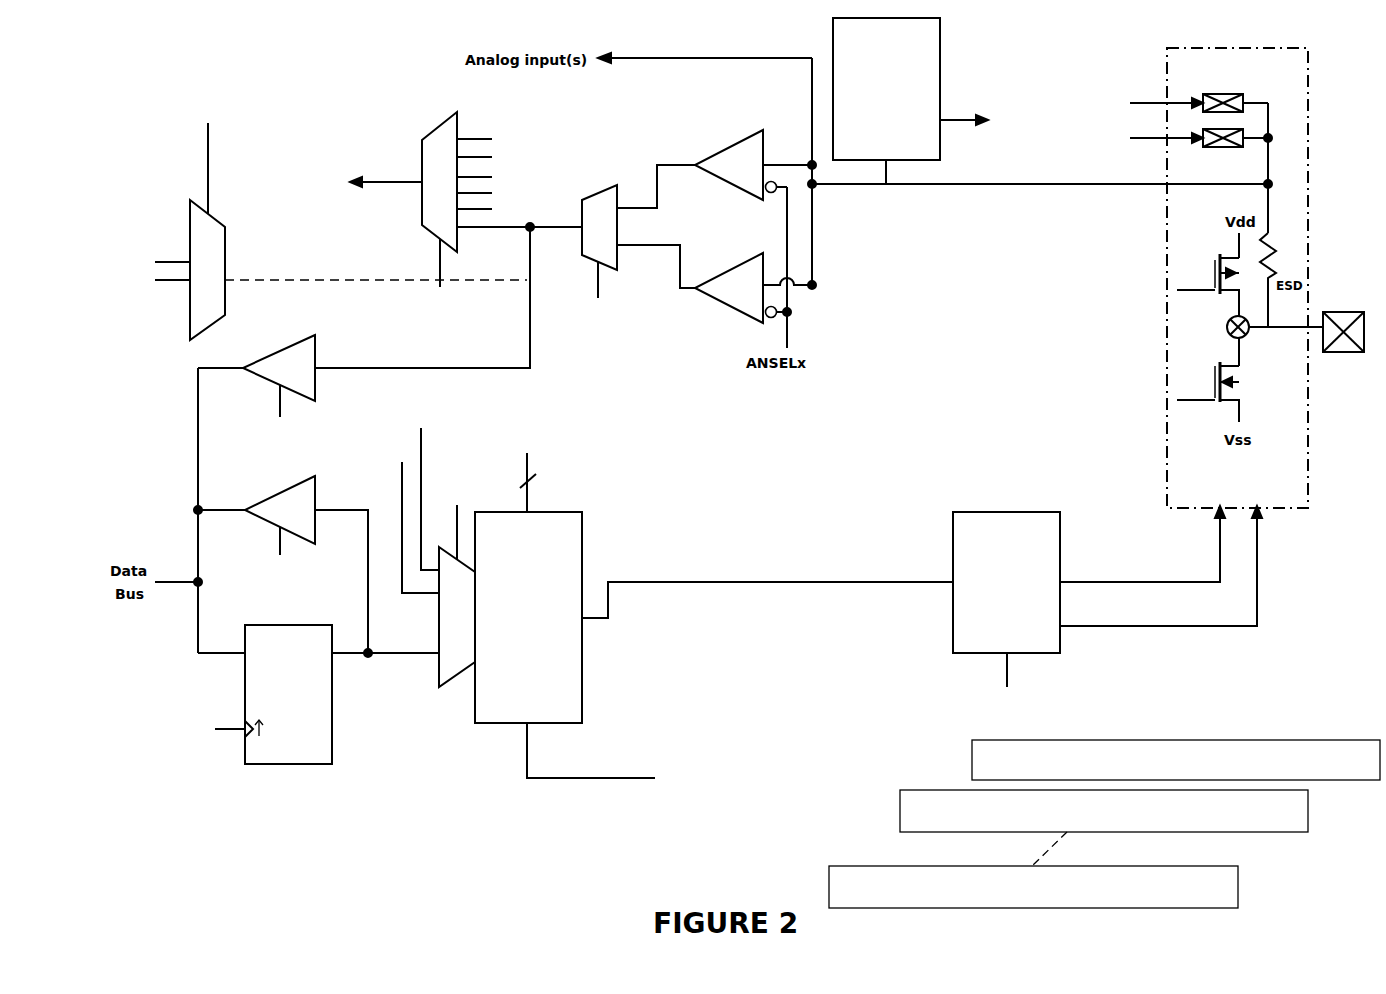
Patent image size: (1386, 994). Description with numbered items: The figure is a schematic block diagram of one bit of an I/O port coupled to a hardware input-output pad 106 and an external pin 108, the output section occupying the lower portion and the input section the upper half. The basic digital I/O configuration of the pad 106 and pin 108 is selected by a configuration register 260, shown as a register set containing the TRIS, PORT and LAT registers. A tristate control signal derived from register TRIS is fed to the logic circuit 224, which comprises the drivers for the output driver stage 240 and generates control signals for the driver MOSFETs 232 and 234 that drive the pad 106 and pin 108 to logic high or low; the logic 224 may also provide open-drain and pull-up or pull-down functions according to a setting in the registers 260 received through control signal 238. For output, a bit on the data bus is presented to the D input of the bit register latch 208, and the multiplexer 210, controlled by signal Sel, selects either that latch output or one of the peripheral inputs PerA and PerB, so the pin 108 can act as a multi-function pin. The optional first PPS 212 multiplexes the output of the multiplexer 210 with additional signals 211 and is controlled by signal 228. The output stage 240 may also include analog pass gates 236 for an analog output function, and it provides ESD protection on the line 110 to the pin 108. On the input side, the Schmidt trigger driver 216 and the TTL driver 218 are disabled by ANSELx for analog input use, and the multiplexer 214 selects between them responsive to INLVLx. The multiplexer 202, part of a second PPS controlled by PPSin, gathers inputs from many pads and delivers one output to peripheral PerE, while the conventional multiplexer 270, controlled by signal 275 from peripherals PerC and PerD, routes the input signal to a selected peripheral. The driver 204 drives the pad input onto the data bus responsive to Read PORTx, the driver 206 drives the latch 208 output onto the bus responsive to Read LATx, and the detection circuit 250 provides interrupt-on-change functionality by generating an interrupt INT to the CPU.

The hardware input-output pad 106 is at (1223, 320).
The external pin 108 is at (1368, 298).
The pad connection line 110 is at (1298, 330).
The multiplexer 202 is at (435, 127).
The driver 204 is at (316, 346).
The driver 206 is at (317, 493).
The bit register latch 208 is at (302, 764).
The multiplexer 210 is at (441, 674).
The additional signals 211 is at (535, 469).
The first PPS 212 is at (583, 512).
The multiplexer 214 is at (617, 185).
The Schmidt trigger driver 216 is at (727, 147).
The TTL driver 218 is at (730, 269).
The logic circuit 224 is at (1038, 511).
The control signal 228 is at (615, 757).
The driver MOSFET 232 is at (1209, 263).
The driver MOSFET 234 is at (1210, 377).
The analog pass gates 236 is at (1273, 66).
The control signal 238 is at (1014, 684).
The output driver stage 240 is at (1172, 48).
The detection circuit 250 is at (940, 95).
The configuration register 260 is at (1333, 832).
The multiplexer 270 is at (194, 207).
The signal 275 is at (208, 157).